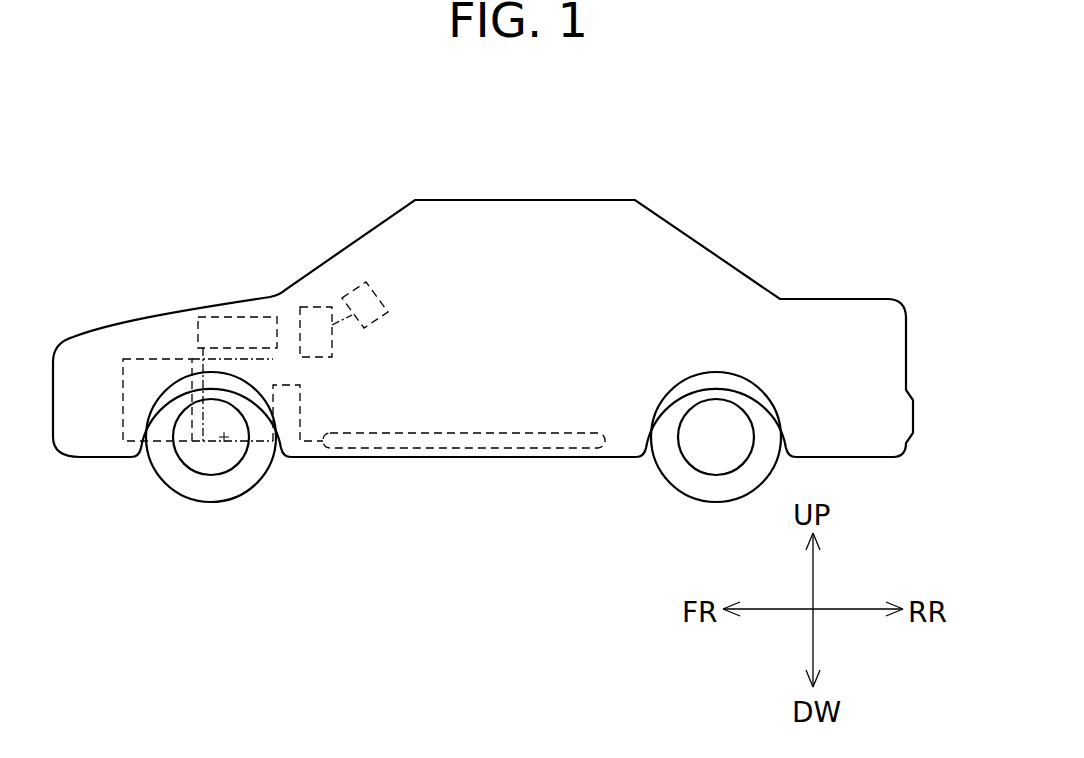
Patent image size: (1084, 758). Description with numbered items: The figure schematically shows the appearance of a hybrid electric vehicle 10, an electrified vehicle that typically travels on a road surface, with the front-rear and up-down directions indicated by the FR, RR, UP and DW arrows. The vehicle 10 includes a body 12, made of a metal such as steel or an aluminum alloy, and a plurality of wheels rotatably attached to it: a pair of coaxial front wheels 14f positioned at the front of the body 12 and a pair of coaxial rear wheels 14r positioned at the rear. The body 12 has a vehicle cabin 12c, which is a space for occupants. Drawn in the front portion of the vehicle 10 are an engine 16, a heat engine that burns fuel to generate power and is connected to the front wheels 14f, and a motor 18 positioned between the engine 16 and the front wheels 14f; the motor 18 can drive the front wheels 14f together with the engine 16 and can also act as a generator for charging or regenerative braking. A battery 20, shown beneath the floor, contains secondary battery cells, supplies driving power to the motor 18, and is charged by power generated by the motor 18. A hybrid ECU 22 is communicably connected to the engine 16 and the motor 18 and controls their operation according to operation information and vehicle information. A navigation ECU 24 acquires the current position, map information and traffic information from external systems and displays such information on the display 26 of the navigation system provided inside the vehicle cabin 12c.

The vehicle 10 is at (483, 340).
The body 12 is at (568, 199).
The vehicle cabin 12c is at (407, 272).
The front wheels 14f is at (211, 492).
The rear wheels 14r is at (717, 500).
The engine 16 is at (148, 372).
The motor 18 is at (224, 437).
The battery 20 is at (504, 450).
The hybrid ECU 22 is at (218, 328).
The navigation ECU 24 is at (315, 320).
The display 26 is at (357, 300).